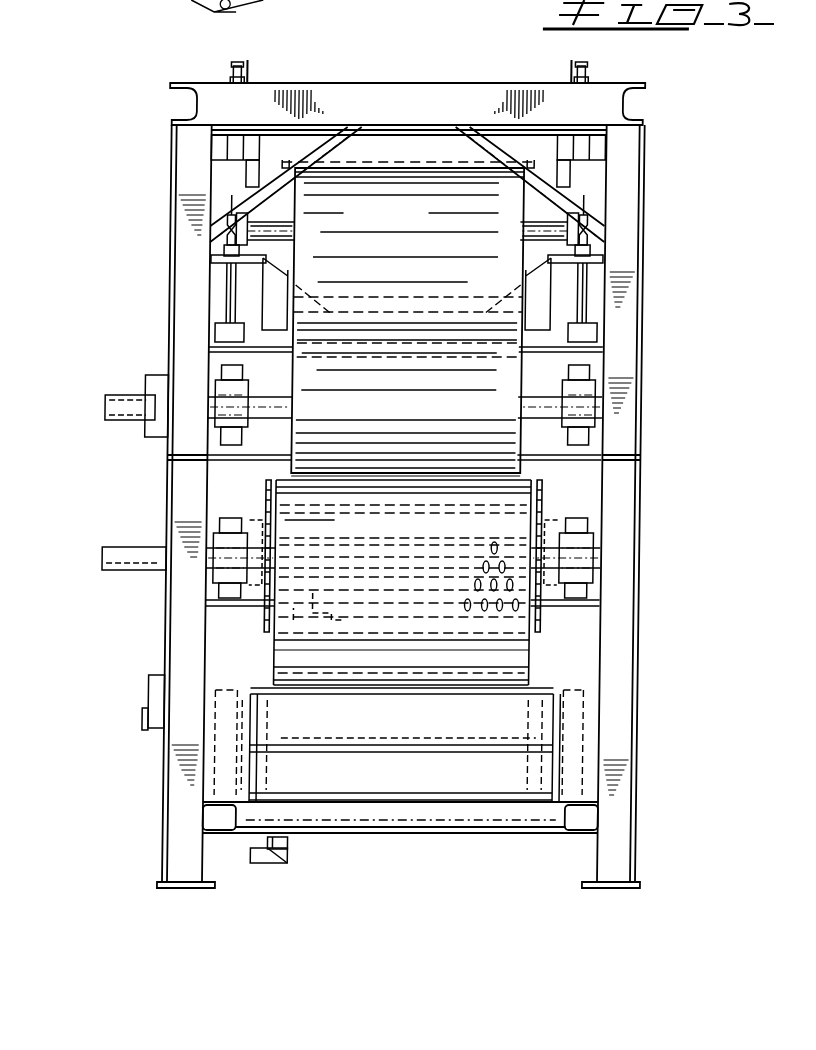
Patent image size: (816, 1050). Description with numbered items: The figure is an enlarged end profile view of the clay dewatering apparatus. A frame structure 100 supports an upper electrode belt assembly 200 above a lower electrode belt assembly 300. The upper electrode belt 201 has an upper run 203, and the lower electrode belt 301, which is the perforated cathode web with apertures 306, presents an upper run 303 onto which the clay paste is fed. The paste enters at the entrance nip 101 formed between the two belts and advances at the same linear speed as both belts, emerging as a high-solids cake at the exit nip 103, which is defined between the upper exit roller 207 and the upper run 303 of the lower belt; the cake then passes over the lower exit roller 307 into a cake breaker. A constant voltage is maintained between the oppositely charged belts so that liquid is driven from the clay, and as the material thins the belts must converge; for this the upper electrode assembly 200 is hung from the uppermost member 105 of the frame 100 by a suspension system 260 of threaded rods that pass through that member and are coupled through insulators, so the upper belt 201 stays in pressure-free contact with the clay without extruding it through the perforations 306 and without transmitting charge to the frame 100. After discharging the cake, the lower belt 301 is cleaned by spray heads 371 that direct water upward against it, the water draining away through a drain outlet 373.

The frame structure 100 is at (640, 316).
The entrance nip 101 is at (107, 8).
The exit nip 103 is at (406, 480).
The uppermost member 105 is at (626, 103).
The upper electrode belt assembly 200 is at (401, 300).
The upper electrode belt 201 is at (494, 230).
The upper run 203 is at (410, 224).
The upper exit roller 207 is at (530, 378).
The suspension system 260 is at (215, 241).
The lower electrode belt assembly 300 is at (398, 342).
The lower electrode belt 301 is at (500, 655).
The upper run 303 is at (428, 534).
The perforations 306 is at (526, 606).
The lower exit roller 307 is at (545, 483).
The spray heads 371 is at (338, 606).
The drain outlet 373 is at (274, 864).